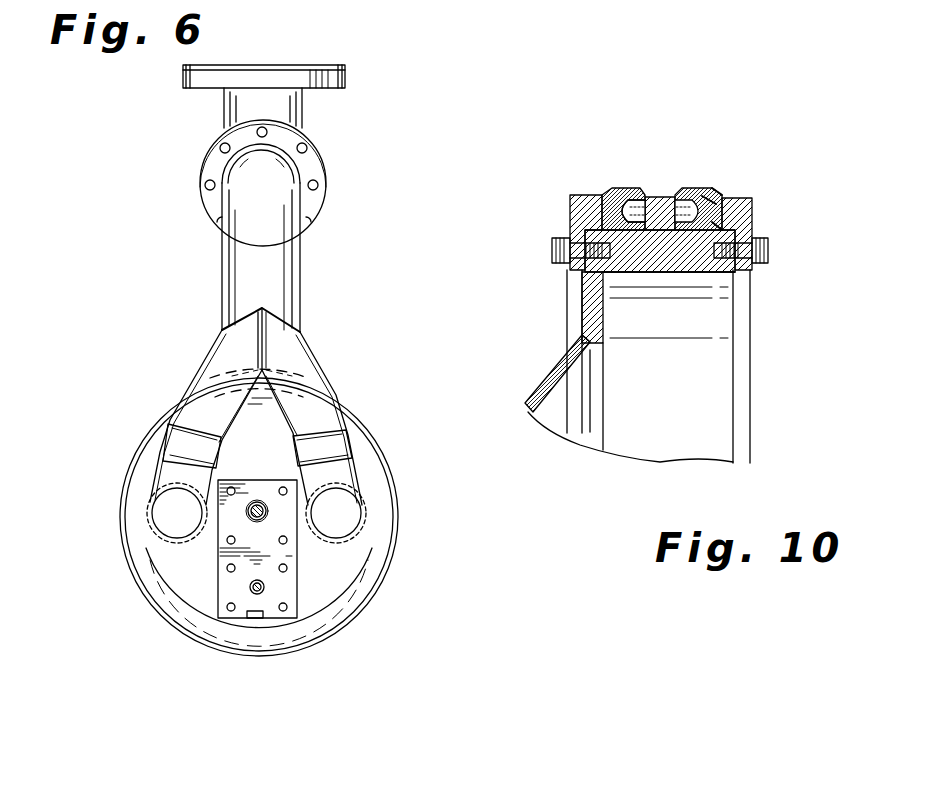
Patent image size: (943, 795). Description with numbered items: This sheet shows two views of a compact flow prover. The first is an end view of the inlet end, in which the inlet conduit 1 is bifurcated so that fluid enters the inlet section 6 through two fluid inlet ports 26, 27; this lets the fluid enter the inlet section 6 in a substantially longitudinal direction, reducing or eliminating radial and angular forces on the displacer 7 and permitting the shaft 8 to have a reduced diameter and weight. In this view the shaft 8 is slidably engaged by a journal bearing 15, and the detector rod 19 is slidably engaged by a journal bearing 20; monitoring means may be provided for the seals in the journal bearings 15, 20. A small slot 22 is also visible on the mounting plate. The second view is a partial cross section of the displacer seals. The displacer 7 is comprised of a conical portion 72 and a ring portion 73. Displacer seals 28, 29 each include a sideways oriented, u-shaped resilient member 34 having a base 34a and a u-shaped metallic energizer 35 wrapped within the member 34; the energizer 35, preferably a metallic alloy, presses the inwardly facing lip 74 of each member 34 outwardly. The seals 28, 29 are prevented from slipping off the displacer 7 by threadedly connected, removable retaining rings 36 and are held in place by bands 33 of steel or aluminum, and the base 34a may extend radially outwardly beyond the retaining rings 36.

In FIG. 6, the inlet conduit 1 is at (285, 275).
In FIG. 6, the inlet section 6 is at (386, 556).
In FIG. 6, the shaft 8 is at (267, 513).
In FIG. 6, the journal bearing 15 is at (258, 503).
In FIG. 6, the detector rod 19 is at (255, 590).
In FIG. 6, the journal bearing 20 is at (265, 587).
In FIG. 6, the slot 22 is at (258, 620).
In FIG. 6, the fluid inlet port 26 is at (165, 520).
In FIG. 6, the fluid inlet port 27 is at (350, 513).
In FIG. 10, the displacer 7 is at (758, 383).
In FIG. 10, the displacer seal 28 is at (615, 186).
In FIG. 10, the displacer seal 29 is at (706, 182).
In FIG. 10, the band 33 is at (680, 197).
In FIG. 10, the u-shaped resilient member 34 is at (715, 197).
In FIG. 10, the base 34a is at (718, 200).
In FIG. 10, the metallic energizer 35 is at (752, 208).
In FIG. 10, the retaining ring 36 is at (570, 205).
In FIG. 10, the conical portion 72 is at (545, 380).
In FIG. 10, the ring portion 73 is at (653, 270).
In FIG. 10, the inwardly facing lip 74 is at (682, 198).